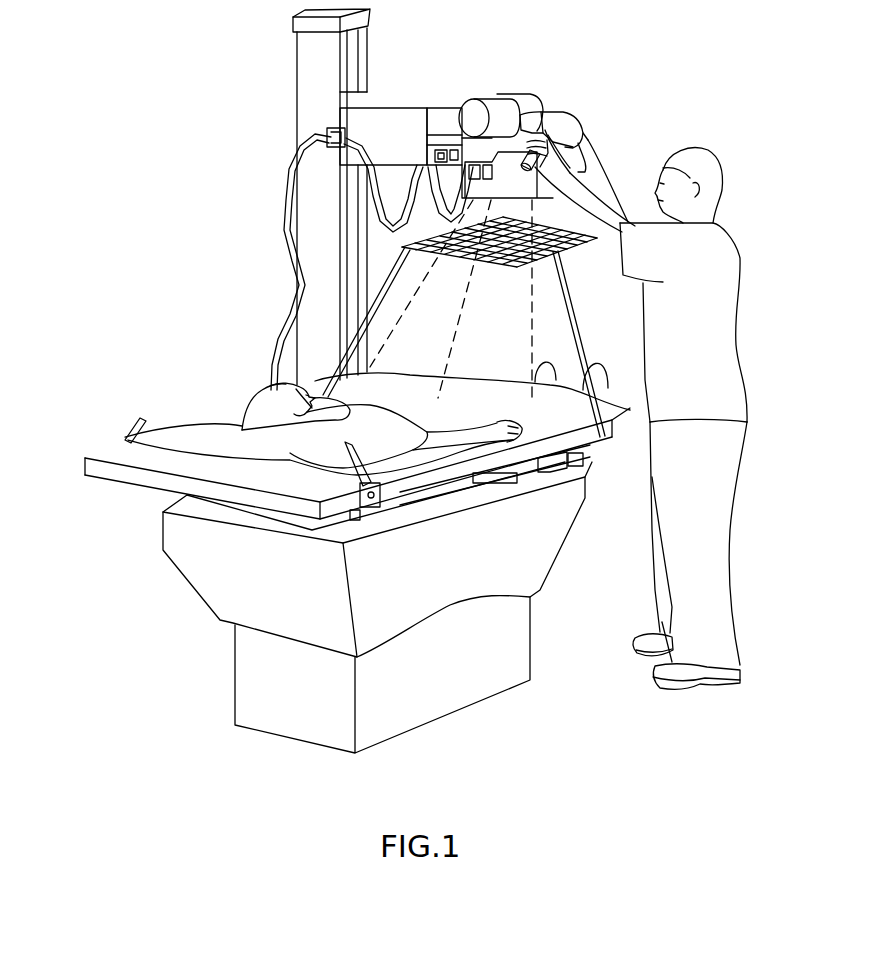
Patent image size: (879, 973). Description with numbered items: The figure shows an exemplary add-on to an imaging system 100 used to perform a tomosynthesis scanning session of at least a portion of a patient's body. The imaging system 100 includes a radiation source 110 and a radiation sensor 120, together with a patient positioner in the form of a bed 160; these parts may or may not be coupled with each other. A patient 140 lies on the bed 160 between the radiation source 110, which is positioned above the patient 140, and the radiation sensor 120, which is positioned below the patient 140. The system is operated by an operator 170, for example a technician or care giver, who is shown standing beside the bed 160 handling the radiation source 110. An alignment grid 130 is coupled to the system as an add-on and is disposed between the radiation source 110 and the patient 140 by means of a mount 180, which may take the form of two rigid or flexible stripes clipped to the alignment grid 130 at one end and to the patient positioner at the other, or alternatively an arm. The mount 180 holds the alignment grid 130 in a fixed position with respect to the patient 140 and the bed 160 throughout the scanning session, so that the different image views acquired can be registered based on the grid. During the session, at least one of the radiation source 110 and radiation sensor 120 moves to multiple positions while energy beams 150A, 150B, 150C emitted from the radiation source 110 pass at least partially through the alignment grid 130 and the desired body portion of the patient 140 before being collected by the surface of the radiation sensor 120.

The imaging system 100 is at (548, 78).
The radiation source 110 is at (620, 168).
The radiation sensor 120 is at (482, 482).
The alignment grid 130 is at (489, 263).
The patient 140 is at (255, 398).
The energy beam 150A is at (428, 277).
The energy beam 150B is at (456, 345).
The energy beam 150C is at (530, 307).
The bed 160 is at (120, 463).
The operator 170 is at (727, 258).
The mount 180 is at (340, 372).